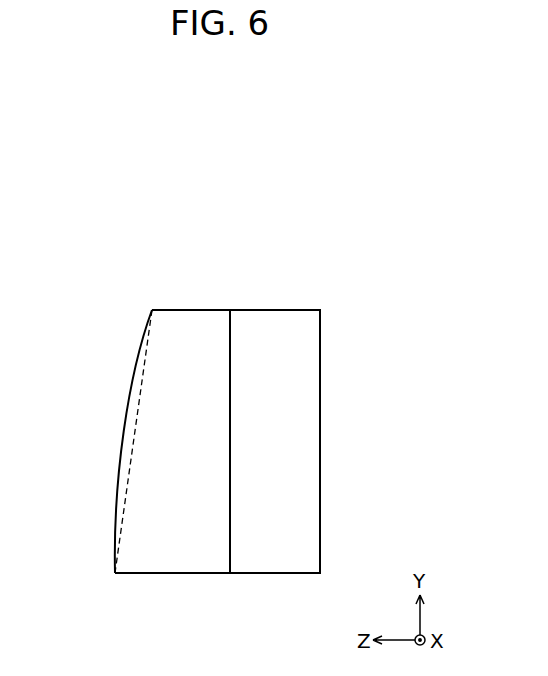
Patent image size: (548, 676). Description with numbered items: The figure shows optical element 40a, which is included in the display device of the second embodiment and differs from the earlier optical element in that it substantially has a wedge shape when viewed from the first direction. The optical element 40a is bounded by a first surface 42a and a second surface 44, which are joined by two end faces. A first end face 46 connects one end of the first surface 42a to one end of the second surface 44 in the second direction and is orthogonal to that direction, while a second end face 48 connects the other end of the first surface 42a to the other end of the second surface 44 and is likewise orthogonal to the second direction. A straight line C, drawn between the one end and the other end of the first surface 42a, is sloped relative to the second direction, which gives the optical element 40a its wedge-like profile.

The optical element 40a is at (196, 308).
The first surface 42a is at (120, 430).
The straight line C is at (128, 481).
The second surface 44 is at (296, 440).
The first end face 46 is at (255, 310).
The second end face 48 is at (207, 575).